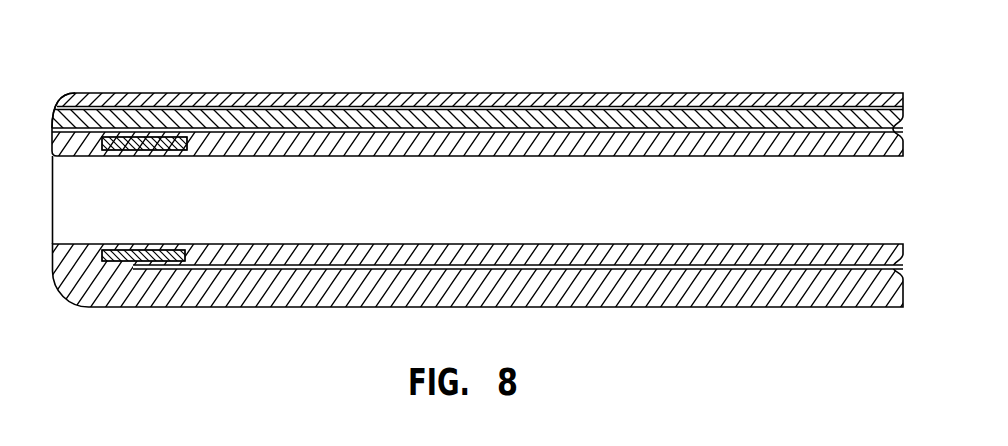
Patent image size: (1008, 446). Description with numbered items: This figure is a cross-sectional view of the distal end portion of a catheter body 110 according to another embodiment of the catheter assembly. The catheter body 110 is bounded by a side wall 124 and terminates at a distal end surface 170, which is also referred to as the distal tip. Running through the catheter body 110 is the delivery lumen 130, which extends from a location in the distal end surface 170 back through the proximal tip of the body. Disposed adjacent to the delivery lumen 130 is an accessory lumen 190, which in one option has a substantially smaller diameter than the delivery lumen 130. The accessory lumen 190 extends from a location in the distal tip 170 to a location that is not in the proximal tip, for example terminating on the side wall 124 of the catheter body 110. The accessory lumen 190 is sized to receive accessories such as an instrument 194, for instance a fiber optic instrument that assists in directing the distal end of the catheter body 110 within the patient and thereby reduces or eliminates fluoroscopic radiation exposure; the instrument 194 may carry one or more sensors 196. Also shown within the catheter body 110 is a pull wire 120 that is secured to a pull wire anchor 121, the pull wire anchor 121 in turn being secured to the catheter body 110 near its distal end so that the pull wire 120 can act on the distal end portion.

The catheter body 110 is at (503, 93).
The side wall 124 is at (676, 93).
The instrument 194 is at (147, 122).
The sensor 196 is at (58, 106).
The accessory lumen 190 is at (51, 126).
The distal end surface 170 is at (51, 154).
The delivery lumen 130 is at (68, 209).
The pull wire 120 is at (482, 265).
The pull wire anchor 121 is at (148, 250).